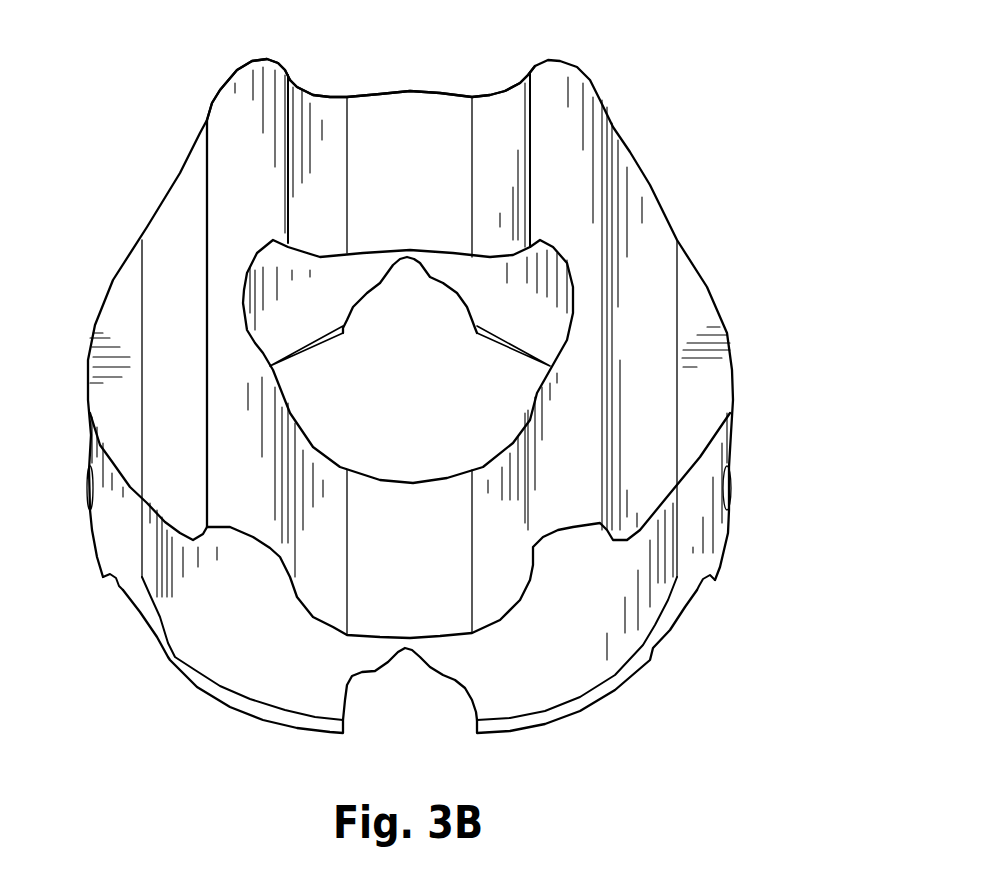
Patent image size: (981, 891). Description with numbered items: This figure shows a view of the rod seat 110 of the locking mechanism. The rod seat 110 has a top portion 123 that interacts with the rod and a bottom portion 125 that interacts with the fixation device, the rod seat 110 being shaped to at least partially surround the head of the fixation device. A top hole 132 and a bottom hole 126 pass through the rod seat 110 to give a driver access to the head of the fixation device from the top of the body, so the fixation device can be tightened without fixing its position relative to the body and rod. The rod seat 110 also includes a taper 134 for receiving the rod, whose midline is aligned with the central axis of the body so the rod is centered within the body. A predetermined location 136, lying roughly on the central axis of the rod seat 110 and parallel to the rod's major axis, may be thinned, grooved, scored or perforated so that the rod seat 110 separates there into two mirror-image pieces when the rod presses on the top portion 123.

The rod seat 110 is at (440, 359).
The top portion 123 is at (475, 315).
The bottom portion 125 is at (443, 655).
The bottom hole 126 is at (382, 719).
The top hole 132 is at (410, 187).
The taper 134 is at (412, 328).
The predetermined location 136 is at (308, 129).